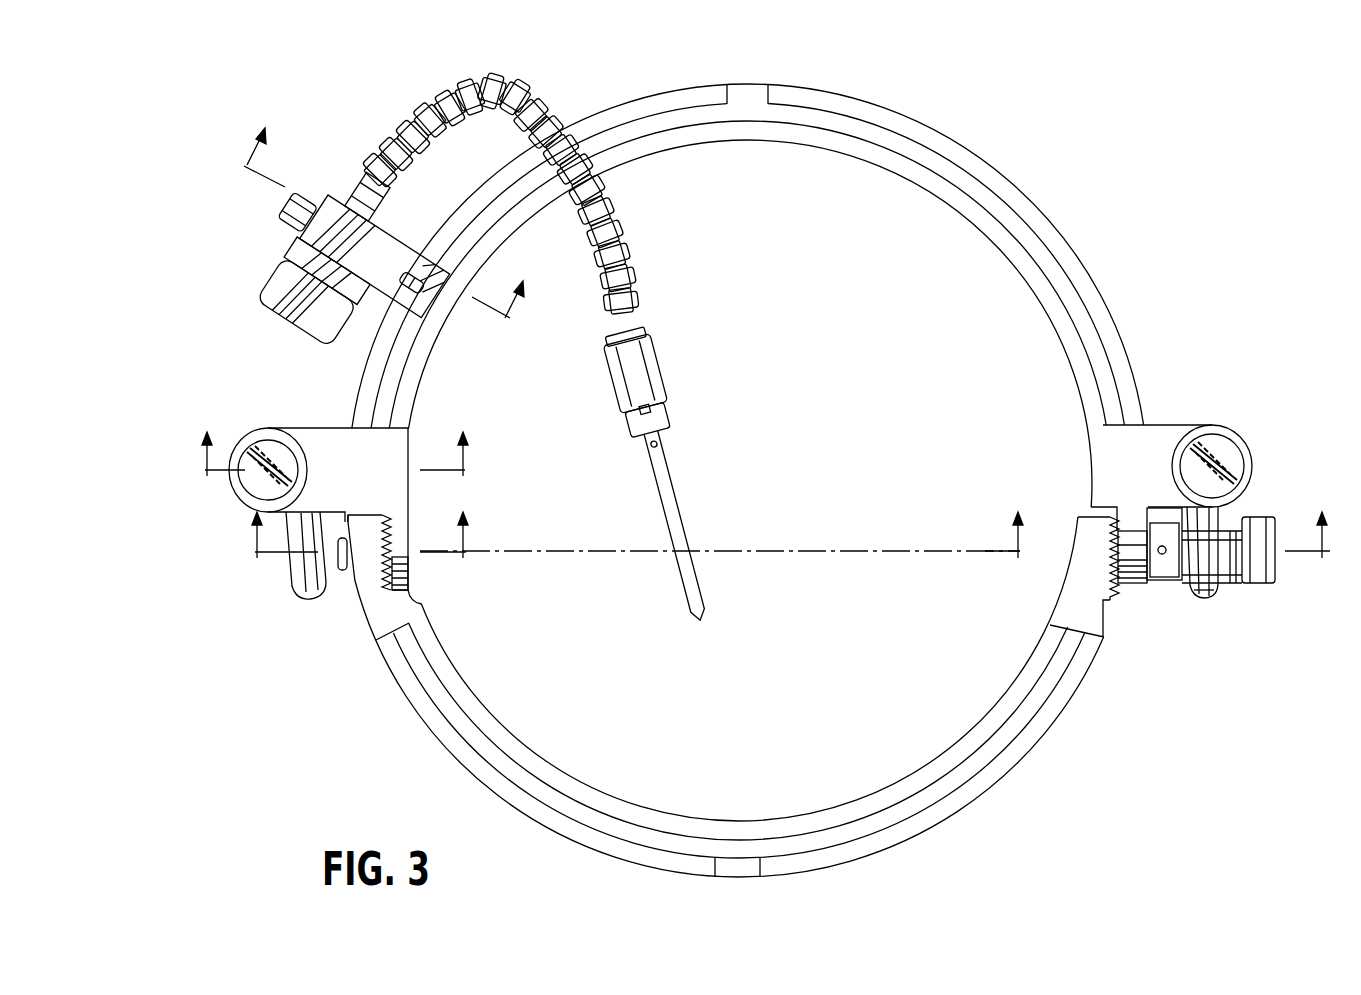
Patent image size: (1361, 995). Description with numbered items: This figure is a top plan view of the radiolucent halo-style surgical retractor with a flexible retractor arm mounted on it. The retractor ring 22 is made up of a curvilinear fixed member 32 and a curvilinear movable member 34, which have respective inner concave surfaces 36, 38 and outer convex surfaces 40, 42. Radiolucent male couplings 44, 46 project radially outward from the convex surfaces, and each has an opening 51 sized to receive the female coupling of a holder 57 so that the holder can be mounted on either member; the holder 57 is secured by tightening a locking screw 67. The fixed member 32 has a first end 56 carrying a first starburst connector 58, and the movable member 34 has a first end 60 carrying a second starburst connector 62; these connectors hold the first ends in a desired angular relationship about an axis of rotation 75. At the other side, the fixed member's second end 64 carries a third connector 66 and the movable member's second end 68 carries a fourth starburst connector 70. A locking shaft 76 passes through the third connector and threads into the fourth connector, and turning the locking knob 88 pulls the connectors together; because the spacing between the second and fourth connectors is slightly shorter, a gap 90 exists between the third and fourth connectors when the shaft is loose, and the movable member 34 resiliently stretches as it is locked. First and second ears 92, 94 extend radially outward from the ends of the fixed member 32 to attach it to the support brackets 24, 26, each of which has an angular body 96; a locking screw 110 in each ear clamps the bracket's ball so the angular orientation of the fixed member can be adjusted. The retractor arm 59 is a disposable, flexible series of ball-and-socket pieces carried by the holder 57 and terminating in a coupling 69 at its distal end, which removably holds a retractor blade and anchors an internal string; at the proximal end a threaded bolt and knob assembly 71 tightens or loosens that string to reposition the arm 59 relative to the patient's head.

The retractor ring 22 is at (1064, 146).
The support bracket 24 is at (318, 604).
The support bracket 26 is at (1200, 604).
The fixed member 32 is at (1030, 135).
The movable member 34 is at (505, 810).
The inner concave surface 36 is at (918, 182).
The inner concave surface 38 is at (905, 778).
The outer convex surface 40 is at (1045, 263).
The outer convex surface 42 is at (930, 795).
The male coupling 44 is at (640, 107).
The male coupling 46 is at (1005, 762).
The opening 51 is at (750, 100).
The first end 56 is at (415, 582).
The holder 57 is at (332, 193).
The first starburst connector 58 is at (372, 515).
The retractor arm 59 is at (417, 122).
The first end 60 is at (352, 512).
The second starburst connector 62 is at (400, 560).
The second end 64 is at (1133, 590).
The third connector 66 is at (1104, 558).
The locking screw 67 is at (298, 212).
The second end 68 is at (1078, 520).
The coupling 69 is at (680, 411).
The fourth starburst connector 70 is at (1120, 540).
The threaded bolt and knob assembly 71 is at (306, 302).
The axis of rotation 75 is at (808, 551).
The locking shaft 76 is at (1232, 590).
The locking knob 88 is at (1268, 516).
The gap 90 is at (1115, 590).
The first ear 92 is at (322, 428).
The second ear 94 is at (1183, 425).
The angular body 96 is at (302, 598).
The locking screw 110 is at (268, 440).